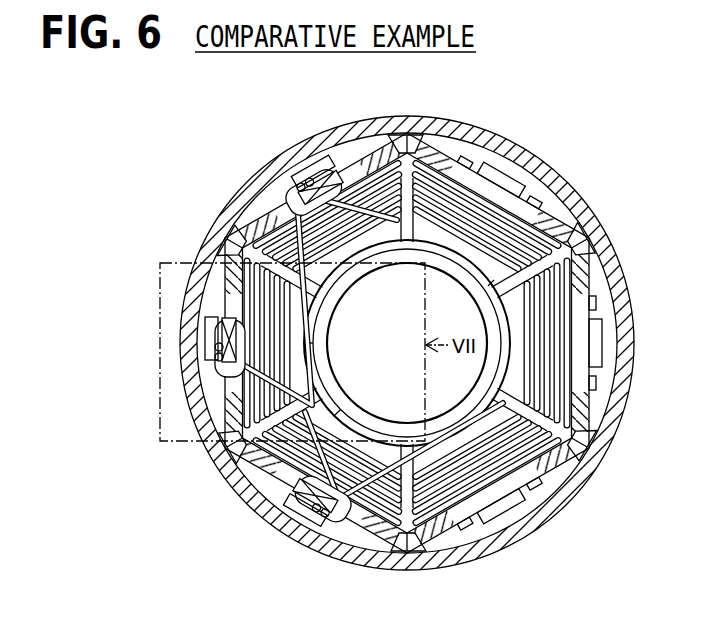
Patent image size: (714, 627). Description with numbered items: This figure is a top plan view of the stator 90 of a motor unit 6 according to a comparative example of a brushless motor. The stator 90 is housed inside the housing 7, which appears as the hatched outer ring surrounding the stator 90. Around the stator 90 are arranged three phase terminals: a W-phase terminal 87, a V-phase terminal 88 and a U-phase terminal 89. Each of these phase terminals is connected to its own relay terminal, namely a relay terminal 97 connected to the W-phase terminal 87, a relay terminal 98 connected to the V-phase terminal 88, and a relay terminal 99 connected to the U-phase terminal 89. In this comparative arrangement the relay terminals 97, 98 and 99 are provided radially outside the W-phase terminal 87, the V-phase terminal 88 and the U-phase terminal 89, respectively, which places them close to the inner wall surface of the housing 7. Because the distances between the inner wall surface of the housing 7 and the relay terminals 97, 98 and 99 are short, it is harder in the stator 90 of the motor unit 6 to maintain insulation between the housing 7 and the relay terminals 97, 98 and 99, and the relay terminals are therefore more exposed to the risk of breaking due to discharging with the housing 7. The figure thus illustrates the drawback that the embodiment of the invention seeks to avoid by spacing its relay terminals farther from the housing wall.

The motor unit 6 is at (557, 192).
The housing 7 is at (200, 257).
The stator 90 is at (453, 148).
The W-phase terminal 87 is at (323, 494).
The V-phase terminal 88 is at (217, 356).
The U-phase terminal 89 is at (312, 168).
The relay terminal 97 is at (340, 514).
The relay terminal 98 is at (213, 327).
The relay terminal 99 is at (297, 173).